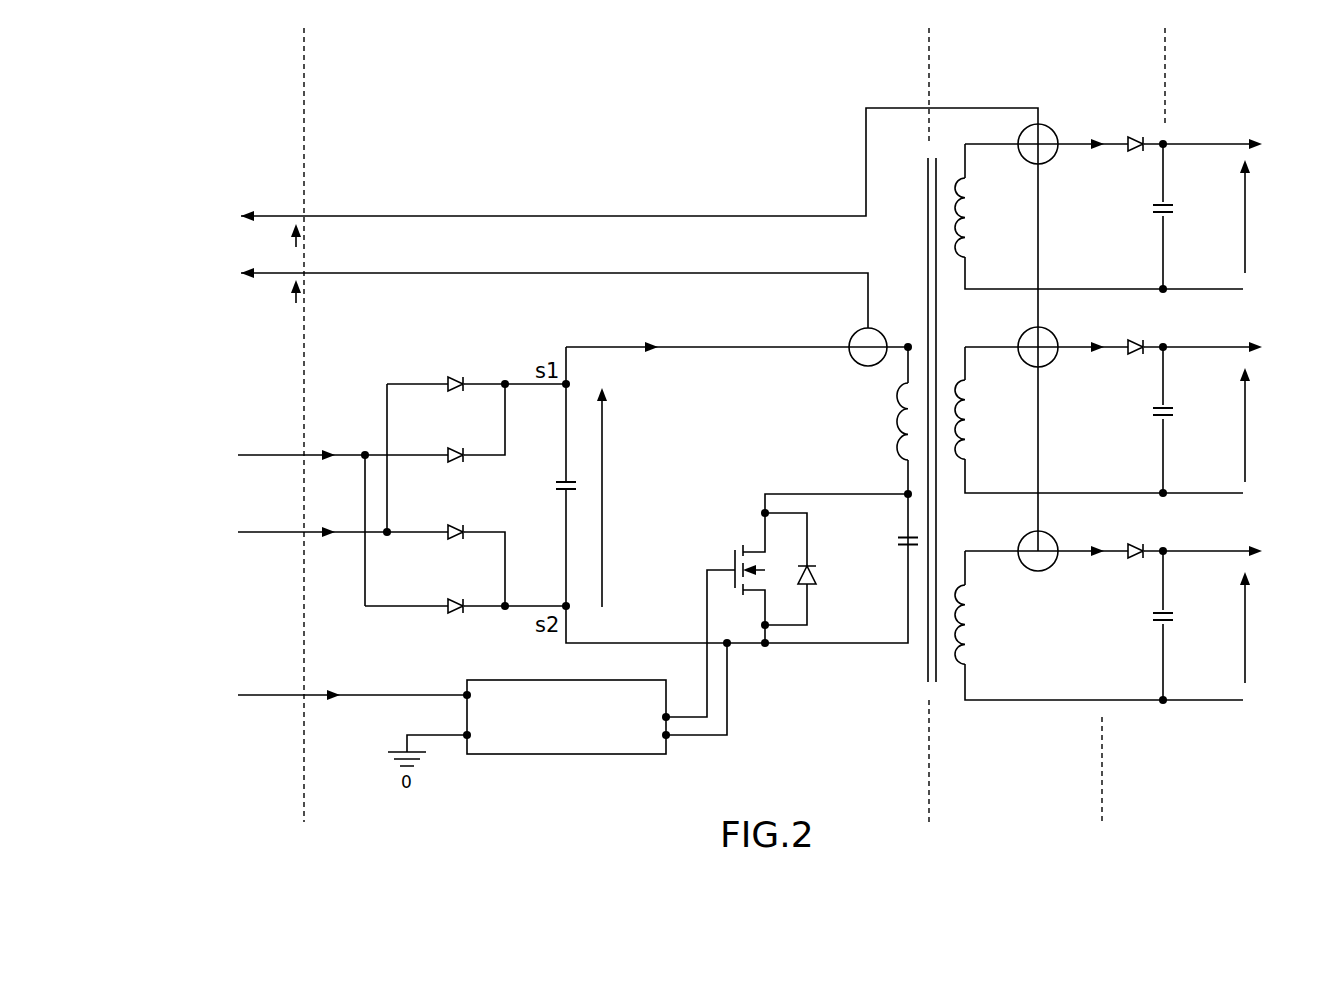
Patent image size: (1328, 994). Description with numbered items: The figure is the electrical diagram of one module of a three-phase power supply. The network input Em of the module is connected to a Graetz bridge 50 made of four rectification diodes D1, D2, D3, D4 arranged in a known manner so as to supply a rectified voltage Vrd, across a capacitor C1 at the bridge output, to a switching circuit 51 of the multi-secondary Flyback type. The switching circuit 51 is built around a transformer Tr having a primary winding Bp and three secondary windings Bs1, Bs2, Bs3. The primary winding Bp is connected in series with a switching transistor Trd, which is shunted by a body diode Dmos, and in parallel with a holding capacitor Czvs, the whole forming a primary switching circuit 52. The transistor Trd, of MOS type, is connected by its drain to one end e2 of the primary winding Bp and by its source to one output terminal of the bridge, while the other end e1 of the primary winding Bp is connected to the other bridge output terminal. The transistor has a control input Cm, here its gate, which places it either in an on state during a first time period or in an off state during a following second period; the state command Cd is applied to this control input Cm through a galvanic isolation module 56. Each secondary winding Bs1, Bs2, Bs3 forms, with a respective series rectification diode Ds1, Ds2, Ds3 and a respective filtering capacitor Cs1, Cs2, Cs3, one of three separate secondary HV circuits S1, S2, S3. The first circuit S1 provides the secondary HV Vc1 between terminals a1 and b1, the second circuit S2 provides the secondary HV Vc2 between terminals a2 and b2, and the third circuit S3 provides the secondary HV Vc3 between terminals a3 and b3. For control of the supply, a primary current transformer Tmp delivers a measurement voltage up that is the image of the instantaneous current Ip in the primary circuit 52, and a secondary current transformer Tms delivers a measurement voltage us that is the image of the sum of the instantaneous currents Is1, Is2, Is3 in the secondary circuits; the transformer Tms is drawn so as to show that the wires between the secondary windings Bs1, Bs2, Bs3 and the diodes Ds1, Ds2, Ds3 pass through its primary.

The Graetz bridge 50 is at (463, 455).
The switching circuit 51 is at (845, 198).
The primary switching circuit 52 is at (712, 332).
The galvanic isolation module 56 is at (594, 755).
The transformer Tr is at (913, 662).
The primary current transformer Tmp is at (855, 335).
The secondary current transformer Tms is at (1022, 133).
The switching transistor Trd is at (734, 562).
The transistor body diode Dmos is at (814, 572).
The holding capacitor Czvs is at (881, 533).
The primary winding Bp is at (897, 428).
The secondary winding Bs1 is at (974, 226).
The secondary winding Bs2 is at (974, 431).
The secondary winding Bs3 is at (976, 632).
The rectification diode Ds1 is at (1138, 133).
The rectification diode Ds2 is at (1138, 338).
The rectification diode Ds3 is at (1138, 542).
The filtering capacitor Cs1 is at (1173, 210).
The filtering capacitor Cs2 is at (1173, 414).
The filtering capacitor Cs3 is at (1174, 624).
The input capacitor C1 is at (556, 484).
The rectification diode D1 is at (460, 378).
The rectification diode D2 is at (456, 449).
The rectification diode D3 is at (456, 526).
The rectification diode D4 is at (456, 601).
The network input Em is at (229, 498).
The state command Cd is at (351, 696).
The control input Cm is at (697, 651).
The instantaneous current Ip is at (646, 347).
The rectified voltage Vrd is at (622, 497).
The end of the primary winding e1 is at (903, 330).
The end of the primary winding e2 is at (885, 480).
The first secondary HV circuit S1 is at (1238, 126).
The second secondary HV circuit S2 is at (1240, 329).
The third secondary HV circuit S3 is at (1242, 531).
The instantaneous current Is1 is at (1098, 160).
The instantaneous current Is2 is at (1105, 363).
The instantaneous current Is3 is at (1097, 567).
The secondary HV Vc1 is at (1267, 216).
The secondary HV Vc2 is at (1267, 425).
The secondary HV Vc3 is at (1267, 627).
The terminal a1 is at (1167, 141).
The terminal a2 is at (1167, 345).
The terminal a3 is at (1167, 549).
The terminal b1 is at (1167, 287).
The terminal b2 is at (1167, 492).
The terminal b3 is at (1167, 700).
The measurement voltage us is at (283, 236).
The measurement voltage up is at (283, 291).